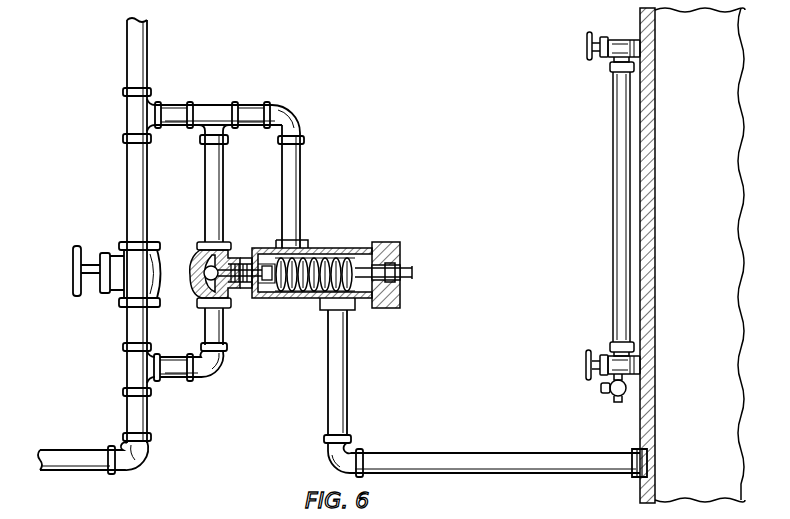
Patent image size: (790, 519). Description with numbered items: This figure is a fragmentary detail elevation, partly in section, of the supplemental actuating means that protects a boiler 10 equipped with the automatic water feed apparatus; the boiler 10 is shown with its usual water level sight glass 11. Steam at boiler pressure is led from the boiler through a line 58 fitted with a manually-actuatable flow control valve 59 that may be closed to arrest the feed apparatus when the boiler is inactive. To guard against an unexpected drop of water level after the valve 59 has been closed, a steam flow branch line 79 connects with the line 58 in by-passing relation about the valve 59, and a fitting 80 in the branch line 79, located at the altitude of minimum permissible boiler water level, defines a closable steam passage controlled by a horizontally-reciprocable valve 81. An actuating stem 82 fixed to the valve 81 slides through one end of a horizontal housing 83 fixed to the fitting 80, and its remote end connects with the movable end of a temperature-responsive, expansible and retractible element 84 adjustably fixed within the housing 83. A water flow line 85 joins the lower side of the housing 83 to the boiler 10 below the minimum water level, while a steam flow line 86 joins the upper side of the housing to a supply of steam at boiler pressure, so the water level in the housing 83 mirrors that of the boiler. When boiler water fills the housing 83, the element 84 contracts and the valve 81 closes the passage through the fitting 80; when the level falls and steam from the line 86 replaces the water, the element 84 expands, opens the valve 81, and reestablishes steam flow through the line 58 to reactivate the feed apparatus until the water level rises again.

The boiler 10 is at (656, 160).
The water level sight glass 11 is at (612, 192).
The line 58 is at (148, 53).
The manually-actuatable flow control valve 59 is at (122, 252).
The steam flow branch line 79 is at (207, 160).
The fitting 80 is at (200, 250).
The horizontally-reciprocable valve 81 is at (197, 279).
The actuating stem 82 is at (246, 296).
The housing 83 is at (357, 247).
The temperature-responsive expansible and retractible element 84 is at (313, 302).
The water flow line 85 is at (334, 396).
The steam flow line 86 is at (301, 161).